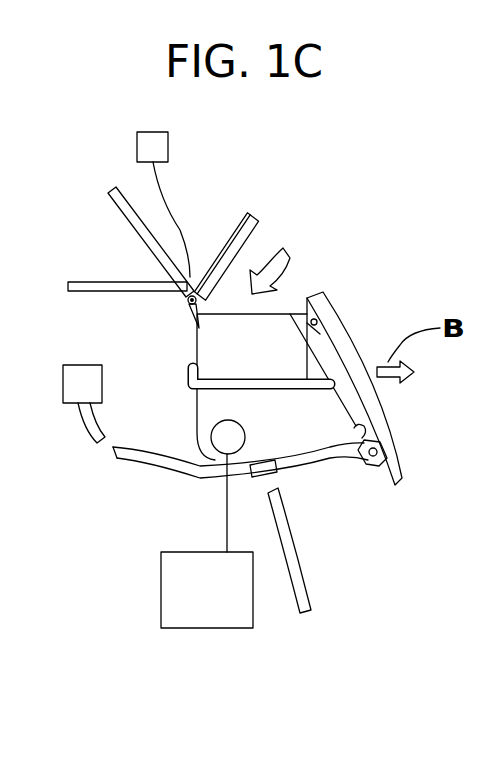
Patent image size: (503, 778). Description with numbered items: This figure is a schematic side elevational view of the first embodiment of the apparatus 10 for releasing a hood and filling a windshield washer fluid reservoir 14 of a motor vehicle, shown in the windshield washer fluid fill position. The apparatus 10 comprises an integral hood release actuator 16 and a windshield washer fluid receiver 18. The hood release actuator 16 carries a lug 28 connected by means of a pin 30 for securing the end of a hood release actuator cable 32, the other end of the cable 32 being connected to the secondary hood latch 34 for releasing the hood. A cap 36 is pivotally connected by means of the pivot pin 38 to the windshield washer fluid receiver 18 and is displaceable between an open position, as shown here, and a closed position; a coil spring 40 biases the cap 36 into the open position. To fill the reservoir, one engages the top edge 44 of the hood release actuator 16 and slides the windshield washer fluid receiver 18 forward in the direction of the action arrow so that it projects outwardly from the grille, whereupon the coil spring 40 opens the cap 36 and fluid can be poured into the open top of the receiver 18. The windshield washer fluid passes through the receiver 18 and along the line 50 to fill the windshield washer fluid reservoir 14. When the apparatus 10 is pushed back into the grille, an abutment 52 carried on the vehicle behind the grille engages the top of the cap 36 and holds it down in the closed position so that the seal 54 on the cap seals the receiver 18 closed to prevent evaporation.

The apparatus 10 is at (377, 221).
The windshield washer fluid reservoir 14 is at (161, 591).
The hood release actuator 16 is at (352, 350).
The windshield washer fluid receiver 18 is at (295, 427).
The lug 28 is at (373, 466).
The pin 30 is at (379, 449).
The hood release actuator cable 32 is at (347, 464).
The secondary hood latch 34 is at (82, 370).
The cap 36 is at (224, 238).
The pivot pin 38 is at (187, 303).
The coil spring 40 is at (137, 147).
The top edge 44 is at (312, 296).
The line 50 is at (227, 502).
The abutment 52 is at (92, 293).
The seal 54 is at (258, 243).